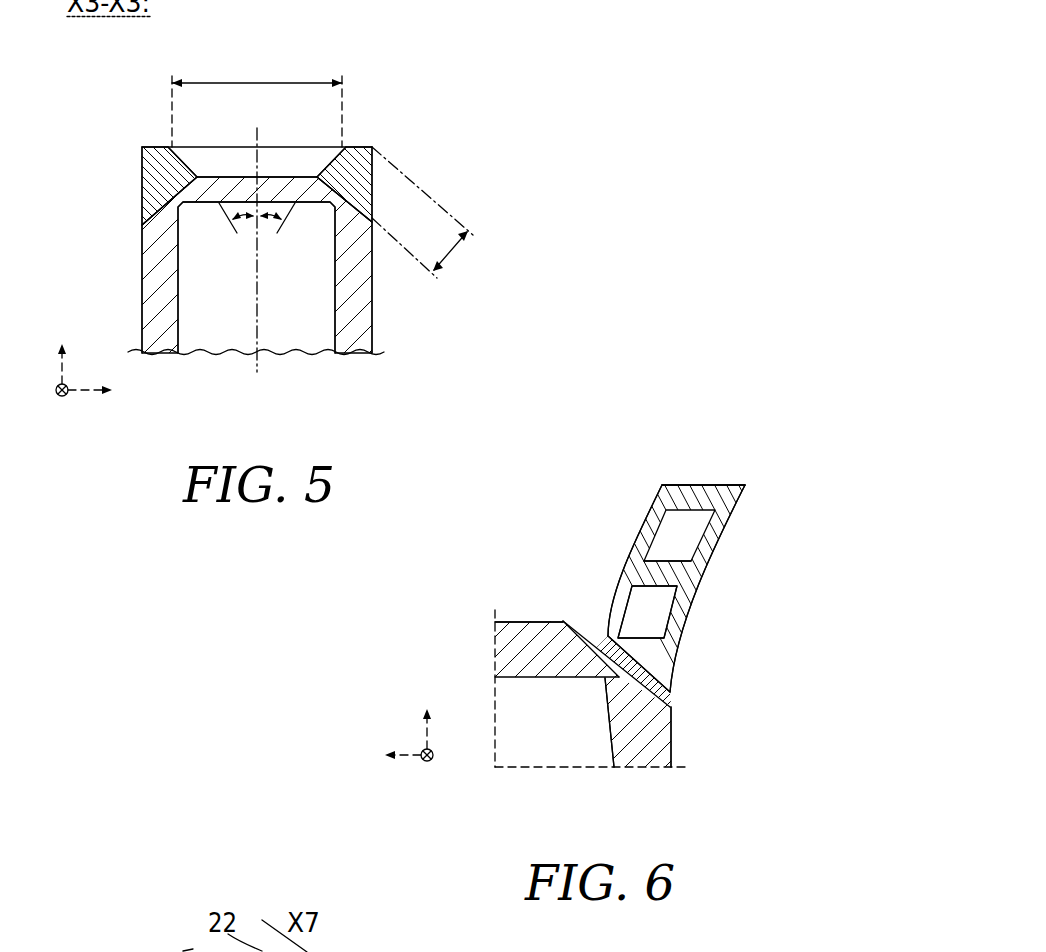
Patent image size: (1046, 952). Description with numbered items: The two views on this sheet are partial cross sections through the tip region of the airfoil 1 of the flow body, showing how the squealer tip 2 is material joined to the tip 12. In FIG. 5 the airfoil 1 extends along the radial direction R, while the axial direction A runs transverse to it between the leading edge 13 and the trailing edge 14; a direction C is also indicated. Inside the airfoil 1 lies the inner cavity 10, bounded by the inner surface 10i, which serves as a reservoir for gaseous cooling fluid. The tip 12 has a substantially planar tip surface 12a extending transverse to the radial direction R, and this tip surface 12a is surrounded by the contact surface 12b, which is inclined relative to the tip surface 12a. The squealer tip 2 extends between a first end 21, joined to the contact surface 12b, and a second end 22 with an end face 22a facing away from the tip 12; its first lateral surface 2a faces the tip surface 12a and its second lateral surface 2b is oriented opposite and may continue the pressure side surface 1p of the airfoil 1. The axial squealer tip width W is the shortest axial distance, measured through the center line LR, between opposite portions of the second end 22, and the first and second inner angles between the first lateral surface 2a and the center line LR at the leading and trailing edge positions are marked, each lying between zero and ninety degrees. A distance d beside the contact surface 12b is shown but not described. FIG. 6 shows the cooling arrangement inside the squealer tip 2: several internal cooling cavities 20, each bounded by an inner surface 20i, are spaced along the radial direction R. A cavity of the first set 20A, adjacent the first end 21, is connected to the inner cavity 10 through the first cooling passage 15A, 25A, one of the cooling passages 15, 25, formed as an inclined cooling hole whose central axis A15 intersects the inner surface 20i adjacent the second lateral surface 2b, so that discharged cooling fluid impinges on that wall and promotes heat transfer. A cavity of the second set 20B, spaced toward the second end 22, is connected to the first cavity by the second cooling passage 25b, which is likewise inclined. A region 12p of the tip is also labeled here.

In FIG. 5, the airfoil 1 is at (272, 300).
In FIG. 6, the airfoil 1 is at (648, 747).
In FIG. 5, the inner cavity 10 is at (322, 330).
In FIG. 6, the inner cavity 10 is at (601, 760).
In FIG. 5, the inner surface 10i is at (183, 330).
In FIG. 5, the squealer tip 2 is at (162, 160).
In FIG. 6, the squealer tip 2 is at (742, 500).
In FIG. 5, the first lateral surface 2a is at (196, 176).
In FIG. 6, the first lateral surface 2a is at (652, 508).
In FIG. 6, the second lateral surface 2b is at (705, 584).
In FIG. 6, the tip 12 is at (492, 597).
In FIG. 5, the tip surface 12a is at (277, 173).
In FIG. 6, the tip surface 12a is at (552, 619).
In FIG. 5, the contact surface 12b is at (142, 182).
In FIG. 6, the pressing surface of die protrusion 12p is at (655, 686).
In FIG. 5, the leading edge 13 is at (140, 261).
In FIG. 5, the trailing edge 14 is at (373, 295).
In FIG. 6, the cooling passage 15 is at (588, 694).
In FIG. 6, the first cooling passage 15A is at (497, 662).
In FIG. 6, the central axis A15 is at (605, 676).
In FIG. 6, the internal cooling cavity 20 is at (739, 581).
In FIG. 6, the first set of cavities 20A is at (668, 603).
In FIG. 6, the second set of cavities 20B is at (709, 536).
In FIG. 6, the inner surface 20i is at (661, 524).
In FIG. 6, the first end 21 is at (617, 768).
In FIG. 6, the second end 22 is at (677, 474).
In FIG. 6, the end face 22a is at (722, 483).
In FIG. 6, the cooling passage 25 is at (704, 664).
In FIG. 6, the first cooling passage 25A is at (663, 648).
In FIG. 6, the second cooling passage 25b is at (643, 562).
In FIG. 6, the pressure side surface 1p is at (679, 718).
In FIG. 5, the axial squealer tip width W is at (265, 82).
In FIG. 5, the distance d is at (422, 212).
In FIG. 5, the center line LR is at (259, 330).
In FIG. 5, the radial direction R is at (66, 368).
In FIG. 6, the radial direction R is at (432, 735).
In FIG. 5, the axial direction A is at (88, 395).
In FIG. 6, the axial direction A is at (435, 760).
In FIG. 5, the circumferential direction C is at (57, 397).
In FIG. 6, the circumferential direction C is at (408, 760).